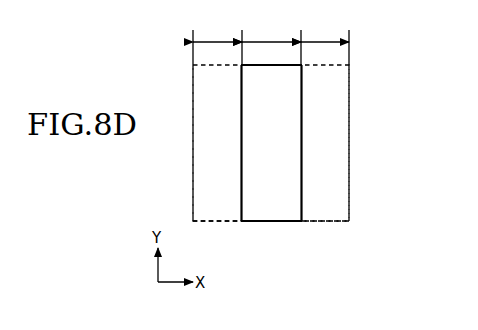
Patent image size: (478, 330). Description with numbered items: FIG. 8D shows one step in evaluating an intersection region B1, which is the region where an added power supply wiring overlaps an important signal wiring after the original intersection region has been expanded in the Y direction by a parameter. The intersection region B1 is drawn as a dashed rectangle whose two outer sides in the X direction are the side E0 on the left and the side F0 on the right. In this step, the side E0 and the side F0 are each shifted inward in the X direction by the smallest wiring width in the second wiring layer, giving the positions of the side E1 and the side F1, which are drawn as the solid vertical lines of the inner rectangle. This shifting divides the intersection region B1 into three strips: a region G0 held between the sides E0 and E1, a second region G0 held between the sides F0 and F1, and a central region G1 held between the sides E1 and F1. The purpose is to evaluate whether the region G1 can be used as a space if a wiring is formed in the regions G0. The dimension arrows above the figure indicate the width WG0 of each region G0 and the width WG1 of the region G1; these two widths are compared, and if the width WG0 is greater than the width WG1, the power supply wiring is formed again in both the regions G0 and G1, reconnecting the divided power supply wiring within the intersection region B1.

The intersection region B1 is at (349, 193).
The side E0 is at (193, 89).
The side E1 is at (241, 147).
The side F0 is at (349, 88).
The side F1 is at (302, 143).
The region G0 is at (210, 221).
The region G1 is at (272, 221).
The width of region G0 WG0 is at (271, 41).
The width of region G1 WG1 is at (271, 29).